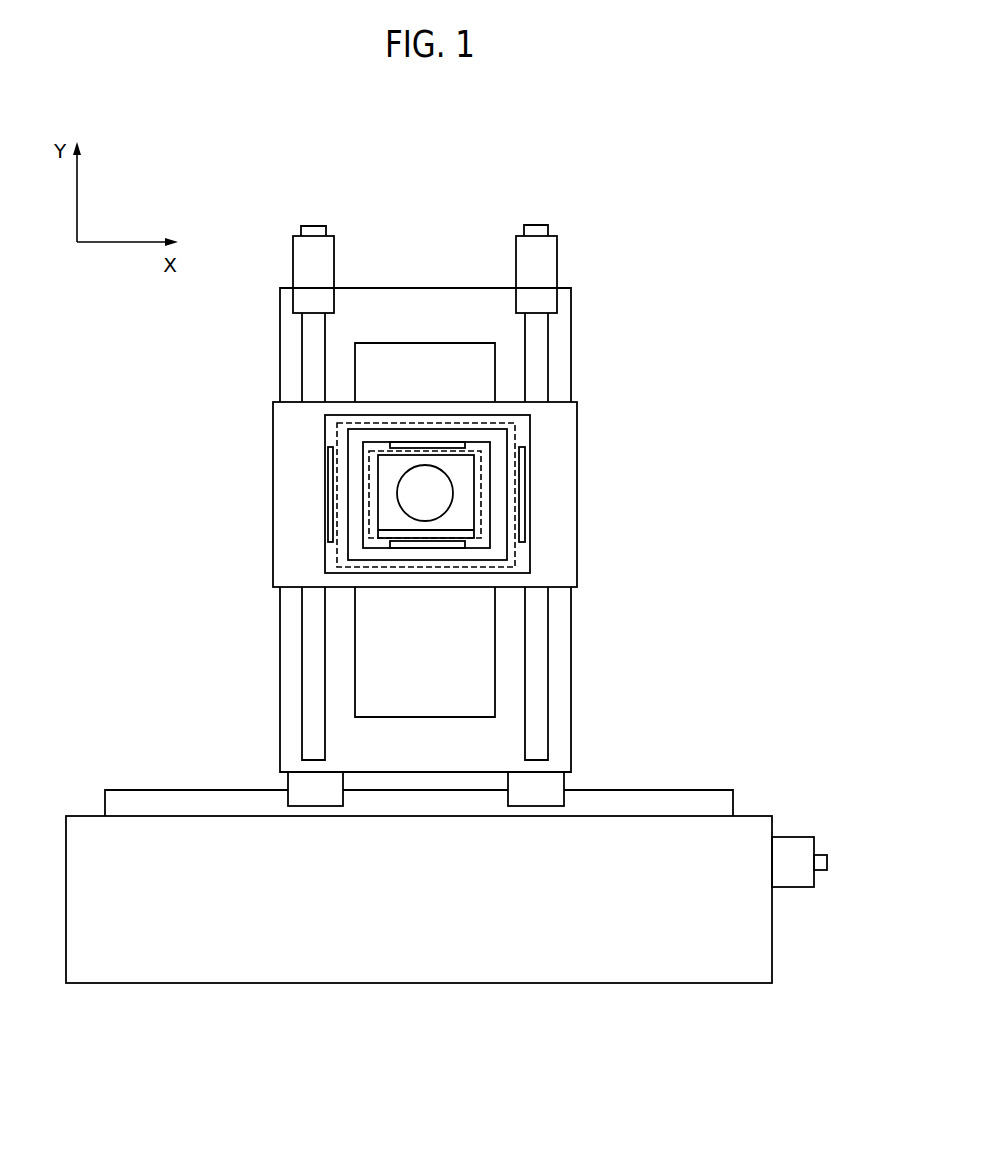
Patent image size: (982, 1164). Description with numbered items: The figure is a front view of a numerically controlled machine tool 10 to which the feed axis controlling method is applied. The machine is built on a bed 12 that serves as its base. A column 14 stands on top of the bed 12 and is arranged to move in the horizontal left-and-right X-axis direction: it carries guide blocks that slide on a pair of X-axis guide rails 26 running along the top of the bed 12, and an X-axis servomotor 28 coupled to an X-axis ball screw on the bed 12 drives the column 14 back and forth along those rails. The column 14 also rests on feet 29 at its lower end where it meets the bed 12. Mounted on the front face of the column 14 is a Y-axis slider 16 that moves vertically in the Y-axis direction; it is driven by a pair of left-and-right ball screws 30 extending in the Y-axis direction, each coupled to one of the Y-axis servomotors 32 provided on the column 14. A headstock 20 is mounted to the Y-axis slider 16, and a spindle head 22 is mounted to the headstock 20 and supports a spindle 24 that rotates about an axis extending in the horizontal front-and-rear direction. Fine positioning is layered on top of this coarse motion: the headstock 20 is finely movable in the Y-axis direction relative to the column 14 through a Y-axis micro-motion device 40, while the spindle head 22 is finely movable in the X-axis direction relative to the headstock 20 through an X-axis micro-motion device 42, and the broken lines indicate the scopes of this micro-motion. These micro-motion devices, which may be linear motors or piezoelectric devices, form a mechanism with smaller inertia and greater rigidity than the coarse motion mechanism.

The numerically controlled machine tool 10 is at (645, 172).
The bed 12 is at (755, 947).
The column 14 is at (558, 355).
The Y-axis slider 16 is at (557, 440).
The headstock 20 is at (362, 553).
The spindle head 22 is at (390, 475).
The spindle 24 is at (435, 483).
The X-axis guide rails 26 is at (693, 803).
The X-axis servomotor 28 is at (789, 835).
The foot 29 is at (298, 781).
The ball screws 30 is at (315, 347).
The Y-axis servomotors 32 is at (303, 273).
The Y-axis micro-motion device 40 is at (327, 460).
The X-axis micro-motion device 42 is at (405, 445).